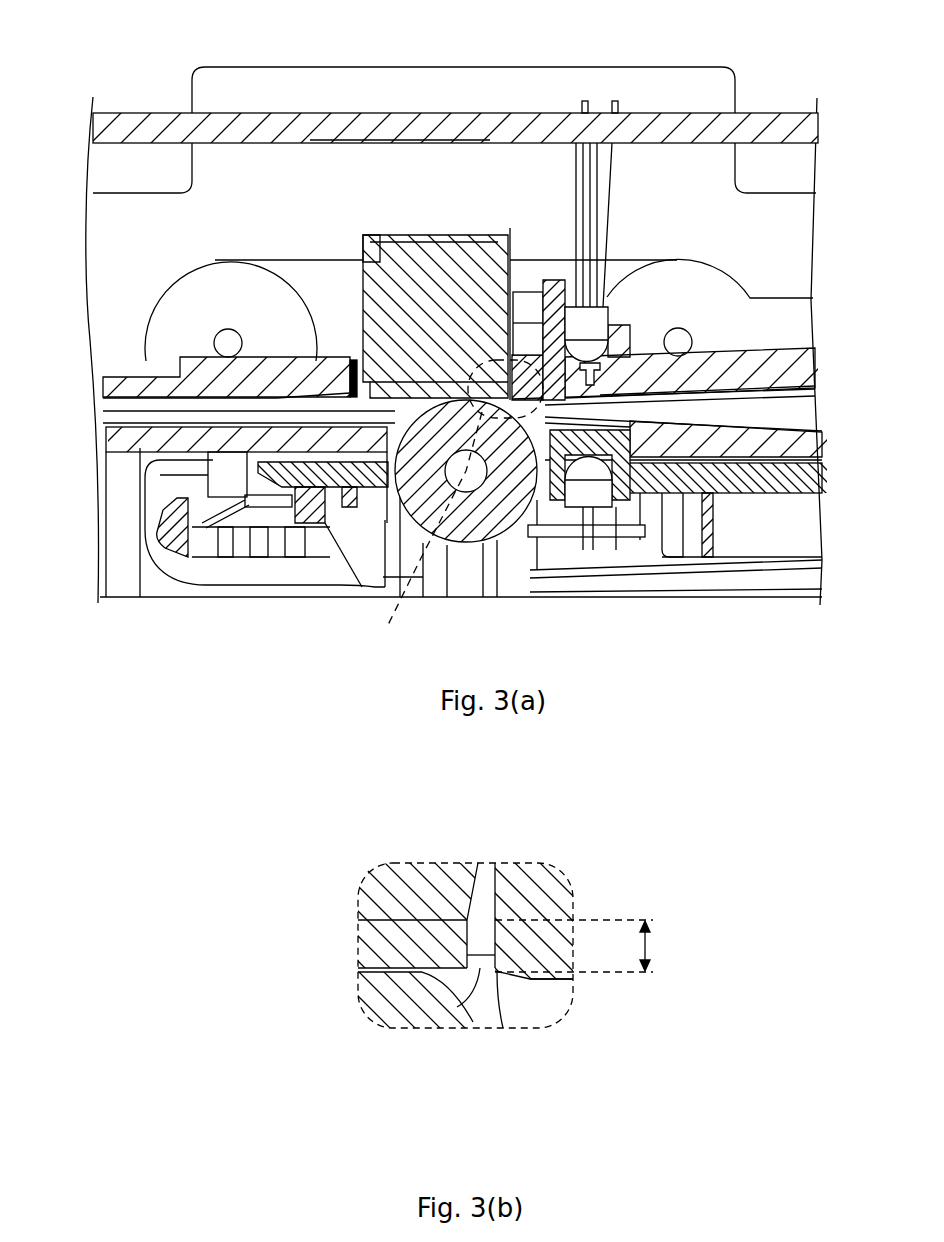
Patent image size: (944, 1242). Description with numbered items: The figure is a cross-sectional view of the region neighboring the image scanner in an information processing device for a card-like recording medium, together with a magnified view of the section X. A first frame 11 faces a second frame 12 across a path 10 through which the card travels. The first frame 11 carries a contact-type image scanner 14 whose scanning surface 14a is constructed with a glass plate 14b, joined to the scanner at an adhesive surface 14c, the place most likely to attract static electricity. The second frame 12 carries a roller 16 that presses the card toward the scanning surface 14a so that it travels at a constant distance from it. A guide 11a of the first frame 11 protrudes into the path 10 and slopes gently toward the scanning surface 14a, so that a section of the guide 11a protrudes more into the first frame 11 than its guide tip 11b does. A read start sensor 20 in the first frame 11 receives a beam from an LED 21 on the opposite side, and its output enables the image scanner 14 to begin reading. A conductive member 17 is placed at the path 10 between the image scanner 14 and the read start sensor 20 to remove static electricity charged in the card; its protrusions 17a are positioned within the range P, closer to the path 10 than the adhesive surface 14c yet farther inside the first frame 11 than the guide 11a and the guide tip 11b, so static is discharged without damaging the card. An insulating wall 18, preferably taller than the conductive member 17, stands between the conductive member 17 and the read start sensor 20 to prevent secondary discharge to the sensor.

In FIG. 3A, the path 10 is at (808, 410).
In FIG. 3A, the first frame 11 is at (103, 387).
In FIG. 3B, the first frame 11 is at (560, 943).
In FIG. 3B, the guide 11a is at (548, 985).
In FIG. 3B, the guide tip 11b is at (493, 1033).
In FIG. 3A, the second frame 12 is at (106, 438).
In FIG. 3A, the contact-type image scanner 14 is at (427, 273).
In FIG. 3B, the contact-type image scanner 14 is at (370, 885).
In FIG. 3A, the scanning surface 14a is at (360, 247).
In FIG. 3B, the scanning surface 14a is at (392, 1025).
In FIG. 3B, the glass plate 14b is at (368, 955).
In FIG. 3B, the adhesive surface 14c is at (350, 920).
In FIG. 3A, the roller 16 is at (479, 525).
In FIG. 3A, the conductive member 17 is at (523, 290).
In FIG. 3B, the conductive member 17 is at (485, 863).
In FIG. 3B, the protrusions 17a is at (460, 1020).
In FIG. 3A, the insulating wall 18 is at (548, 283).
In FIG. 3A, the read start sensor 20 is at (597, 307).
In FIG. 3A, the LED 21 is at (578, 495).
In FIG. 3A, the section X is at (461, 506).
In FIG. 3B, the range P is at (658, 946).